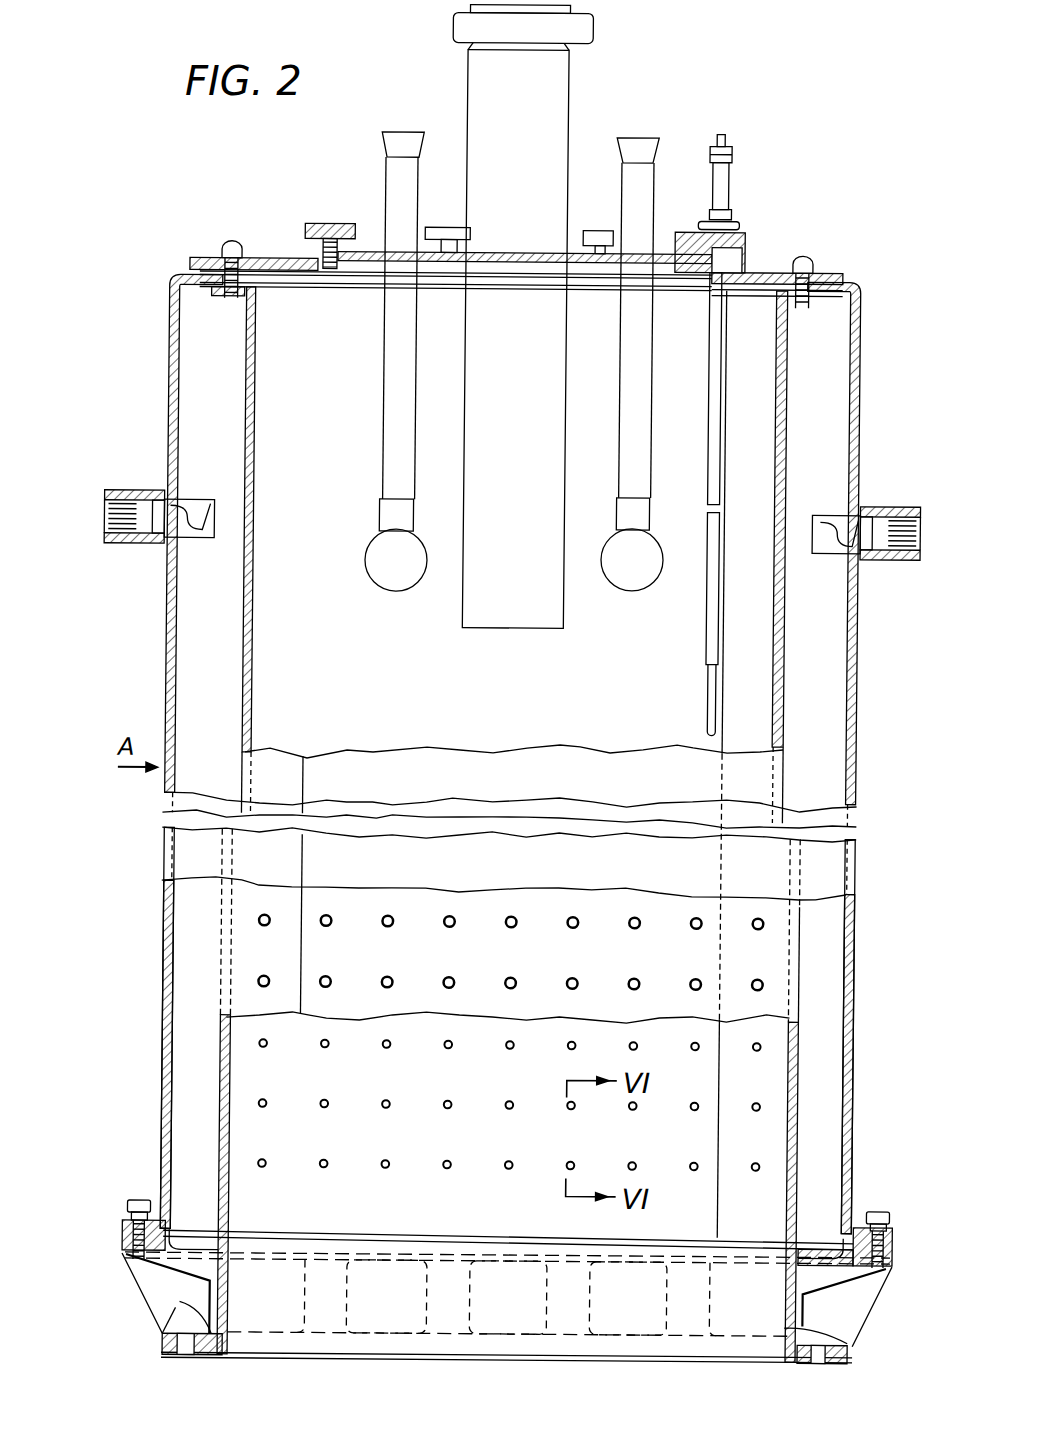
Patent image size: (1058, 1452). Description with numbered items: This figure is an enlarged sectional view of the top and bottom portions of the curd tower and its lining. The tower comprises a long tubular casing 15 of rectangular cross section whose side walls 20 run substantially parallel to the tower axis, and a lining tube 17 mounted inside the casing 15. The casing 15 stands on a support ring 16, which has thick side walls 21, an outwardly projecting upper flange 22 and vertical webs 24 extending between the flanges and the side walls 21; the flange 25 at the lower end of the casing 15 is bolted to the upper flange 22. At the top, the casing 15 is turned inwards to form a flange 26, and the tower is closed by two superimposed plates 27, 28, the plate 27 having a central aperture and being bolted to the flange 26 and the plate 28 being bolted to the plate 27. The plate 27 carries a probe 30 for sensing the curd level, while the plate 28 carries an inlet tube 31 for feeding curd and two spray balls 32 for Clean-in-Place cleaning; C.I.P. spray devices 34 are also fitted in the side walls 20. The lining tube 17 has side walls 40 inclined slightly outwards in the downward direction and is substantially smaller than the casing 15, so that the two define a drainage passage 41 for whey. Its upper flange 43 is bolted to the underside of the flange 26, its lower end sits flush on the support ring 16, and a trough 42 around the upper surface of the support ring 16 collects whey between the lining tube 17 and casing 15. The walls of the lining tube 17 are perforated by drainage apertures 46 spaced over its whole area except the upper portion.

The tubular casing 15 is at (165, 672).
The support ring 16 is at (447, 1236).
The lining tube 17 is at (252, 645).
The side walls 20 is at (165, 600).
The side walls 21 is at (228, 1310).
The upper flange 22 is at (122, 1252).
The vertical webs 24 is at (178, 1308).
The flange 25 is at (124, 1224).
The flange 26 is at (178, 303).
The plate 27 is at (278, 258).
The plate 28 is at (372, 250).
The probe 30 is at (706, 686).
The inlet tube 31 is at (566, 80).
The spray balls 32 is at (395, 593).
The C.I.P. spray devices 34 is at (180, 495).
The side walls 40 is at (252, 548).
The drainage passage 41 is at (190, 950).
The trough 42 is at (195, 1250).
The flange 43 is at (212, 300).
The drainage apertures 46 is at (510, 918).